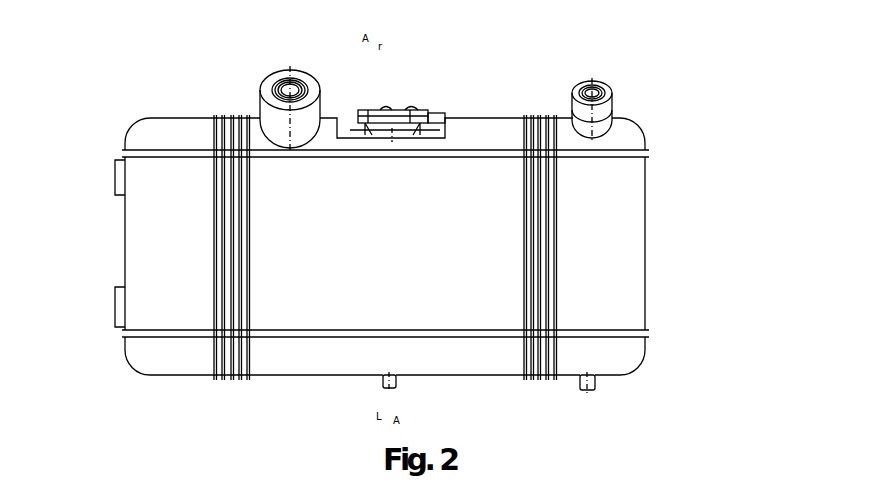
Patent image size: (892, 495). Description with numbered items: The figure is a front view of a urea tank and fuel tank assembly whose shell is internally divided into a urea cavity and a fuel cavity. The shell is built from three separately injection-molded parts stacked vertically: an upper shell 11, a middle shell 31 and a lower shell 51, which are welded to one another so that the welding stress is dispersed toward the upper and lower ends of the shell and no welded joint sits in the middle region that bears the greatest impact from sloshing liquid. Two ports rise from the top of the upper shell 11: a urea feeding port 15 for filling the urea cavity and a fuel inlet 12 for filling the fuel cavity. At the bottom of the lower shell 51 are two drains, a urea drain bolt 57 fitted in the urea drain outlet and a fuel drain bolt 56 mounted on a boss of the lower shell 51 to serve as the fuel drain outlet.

The upper shell 11 is at (170, 141).
The middle shell 31 is at (165, 256).
The lower shell 51 is at (168, 355).
The urea feeding port 15 is at (285, 88).
The fuel inlet 12 is at (597, 98).
The urea drain bolt 57 is at (389, 379).
The fuel drain bolt 56 is at (598, 385).